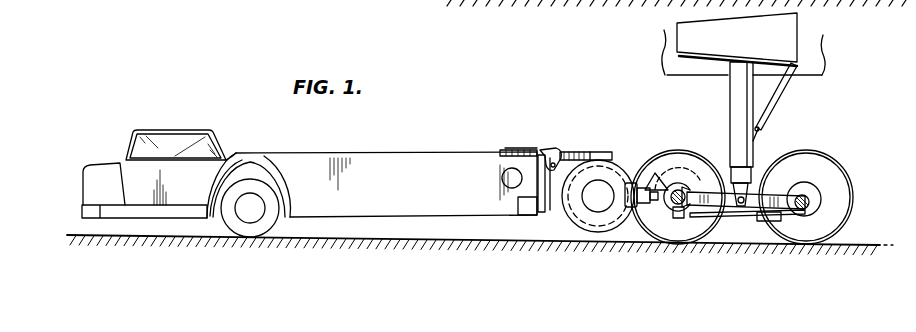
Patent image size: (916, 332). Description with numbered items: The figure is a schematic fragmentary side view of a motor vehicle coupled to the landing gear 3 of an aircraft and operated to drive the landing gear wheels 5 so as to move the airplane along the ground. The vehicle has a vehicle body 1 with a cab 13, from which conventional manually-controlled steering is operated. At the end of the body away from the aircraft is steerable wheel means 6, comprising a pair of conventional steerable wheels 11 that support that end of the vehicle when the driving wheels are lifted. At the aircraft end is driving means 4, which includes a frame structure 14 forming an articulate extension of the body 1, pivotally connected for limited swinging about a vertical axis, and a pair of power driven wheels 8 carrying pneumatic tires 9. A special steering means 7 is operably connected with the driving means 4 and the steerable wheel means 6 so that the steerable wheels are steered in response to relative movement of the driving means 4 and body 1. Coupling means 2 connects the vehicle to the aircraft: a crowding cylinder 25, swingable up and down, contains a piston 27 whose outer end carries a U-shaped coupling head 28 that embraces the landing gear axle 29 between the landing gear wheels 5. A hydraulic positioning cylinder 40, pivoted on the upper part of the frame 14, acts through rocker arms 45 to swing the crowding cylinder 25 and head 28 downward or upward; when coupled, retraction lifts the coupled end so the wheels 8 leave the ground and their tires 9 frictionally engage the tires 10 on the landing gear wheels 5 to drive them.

The vehicle body 1 is at (415, 150).
The cab 13 is at (166, 130).
The steerable wheels 11 is at (251, 177).
The steerable wheel means 6 is at (290, 189).
The steering means 7 is at (528, 144).
The frame structure 14 is at (546, 212).
The rocker arms 45 is at (548, 152).
The hydraulic positioning cylinder 40 is at (594, 150).
The power driven wheels 8 is at (607, 150).
The pneumatic tires 9 is at (580, 222).
The driving means 4 is at (627, 160).
The crowding cylinder 25 is at (645, 190).
The landing gear wheels 5 is at (699, 146).
The coupling means 2 is at (694, 198).
The landing gear axle 29 is at (681, 187).
The piston 27 is at (665, 210).
The coupling head 28 is at (687, 218).
The tires 10 is at (717, 229).
The landing gear 3 is at (776, 133).